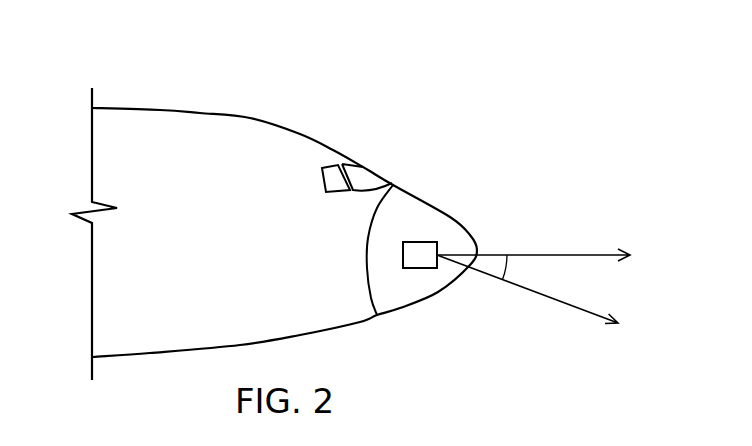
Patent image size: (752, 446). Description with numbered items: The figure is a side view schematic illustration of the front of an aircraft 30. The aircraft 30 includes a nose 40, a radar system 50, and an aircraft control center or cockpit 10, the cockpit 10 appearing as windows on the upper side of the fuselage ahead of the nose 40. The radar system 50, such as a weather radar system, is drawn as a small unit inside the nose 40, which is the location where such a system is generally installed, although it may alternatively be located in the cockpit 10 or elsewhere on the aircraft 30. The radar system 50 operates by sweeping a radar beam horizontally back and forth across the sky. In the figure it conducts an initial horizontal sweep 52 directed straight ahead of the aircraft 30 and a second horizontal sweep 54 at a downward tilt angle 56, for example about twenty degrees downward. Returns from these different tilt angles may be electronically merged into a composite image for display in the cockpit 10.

The aircraft 30 is at (158, 125).
The cockpit 10 is at (368, 177).
The nose 40 is at (427, 222).
The radar system 50 is at (420, 268).
The initial horizontal sweep 52 is at (593, 253).
The second horizontal sweep 54 is at (540, 297).
The downward tilt angle 56 is at (507, 262).